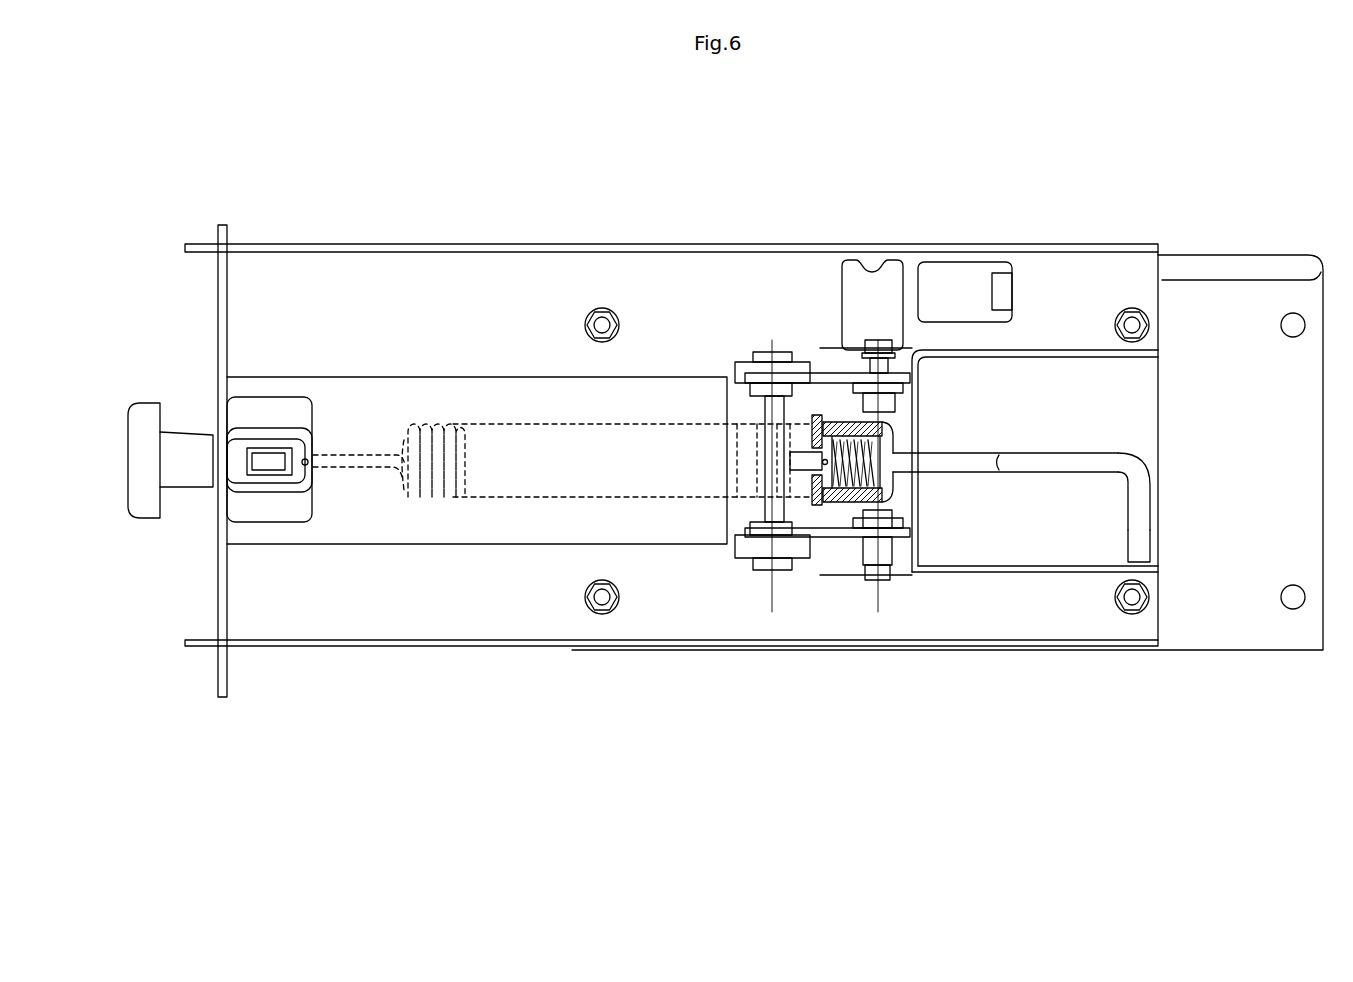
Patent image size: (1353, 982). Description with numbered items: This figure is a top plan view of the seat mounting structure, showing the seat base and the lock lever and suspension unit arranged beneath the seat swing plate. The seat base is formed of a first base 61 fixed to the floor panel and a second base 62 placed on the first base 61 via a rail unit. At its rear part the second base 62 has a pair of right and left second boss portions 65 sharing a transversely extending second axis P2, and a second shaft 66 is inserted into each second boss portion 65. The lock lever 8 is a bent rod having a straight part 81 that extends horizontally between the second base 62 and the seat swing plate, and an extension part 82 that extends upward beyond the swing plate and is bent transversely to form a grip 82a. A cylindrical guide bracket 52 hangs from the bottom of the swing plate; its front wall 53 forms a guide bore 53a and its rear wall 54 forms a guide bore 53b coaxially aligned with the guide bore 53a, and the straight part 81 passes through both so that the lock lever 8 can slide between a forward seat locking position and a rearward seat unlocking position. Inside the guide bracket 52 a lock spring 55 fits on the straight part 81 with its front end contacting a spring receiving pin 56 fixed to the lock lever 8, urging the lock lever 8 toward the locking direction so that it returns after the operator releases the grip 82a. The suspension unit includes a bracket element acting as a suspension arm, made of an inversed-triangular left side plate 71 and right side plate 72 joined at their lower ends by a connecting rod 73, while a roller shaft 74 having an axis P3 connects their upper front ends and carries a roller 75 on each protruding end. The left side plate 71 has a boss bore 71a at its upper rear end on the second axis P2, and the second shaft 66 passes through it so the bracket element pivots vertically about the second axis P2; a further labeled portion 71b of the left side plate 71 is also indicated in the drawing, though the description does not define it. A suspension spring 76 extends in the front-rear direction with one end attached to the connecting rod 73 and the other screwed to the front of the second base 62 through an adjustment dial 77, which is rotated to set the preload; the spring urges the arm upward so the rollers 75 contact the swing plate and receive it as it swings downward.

The lock lever 8 is at (1153, 505).
The guide bracket 52 is at (893, 430).
The front wall 53 is at (812, 490).
The guide bore 53a is at (813, 422).
The guide bore 53b is at (900, 457).
The rear wall 54 is at (893, 484).
The lock spring 55 is at (834, 538).
The spring receiving pin 56 is at (820, 462).
The first base 61 is at (1224, 254).
The second base 62 is at (412, 243).
The second boss portions 65 is at (905, 357).
The second shaft 66 is at (897, 345).
The left side plate 71 is at (812, 538).
The boss bore 71a is at (855, 538).
The upper link arm 71b is at (850, 372).
The right side plate 72 is at (826, 374).
The connecting rod 73 is at (893, 500).
The roller shaft 74 is at (788, 405).
The roller 75 is at (740, 375).
The suspension spring 76 is at (440, 424).
The adjustment dial 77 is at (135, 462).
The straight part 81 is at (967, 459).
The extension part 82 is at (1069, 455).
The grip 82a is at (1142, 530).
The second axis P2 is at (878, 340).
The axis P3 is at (769, 489).